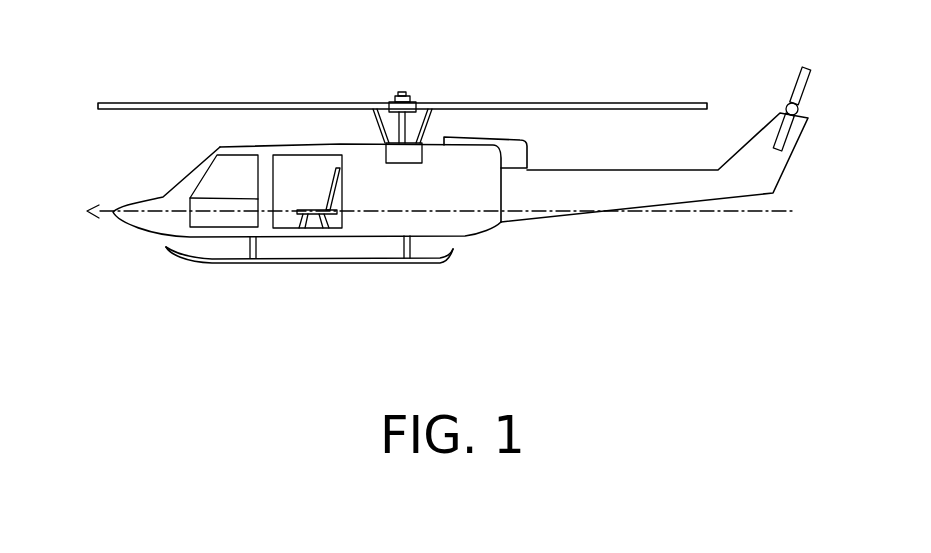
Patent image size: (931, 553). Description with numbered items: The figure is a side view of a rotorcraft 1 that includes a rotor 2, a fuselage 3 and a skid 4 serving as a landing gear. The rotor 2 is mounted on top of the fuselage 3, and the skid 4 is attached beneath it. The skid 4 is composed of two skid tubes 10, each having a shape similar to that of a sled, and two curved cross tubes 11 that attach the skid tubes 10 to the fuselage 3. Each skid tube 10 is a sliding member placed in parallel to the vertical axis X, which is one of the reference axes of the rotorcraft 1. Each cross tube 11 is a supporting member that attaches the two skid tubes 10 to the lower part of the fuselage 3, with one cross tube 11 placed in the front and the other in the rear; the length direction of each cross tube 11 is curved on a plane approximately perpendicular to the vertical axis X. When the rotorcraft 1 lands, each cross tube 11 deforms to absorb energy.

The rotorcraft 1 is at (108, 68).
The rotor 2 is at (568, 102).
The fuselage 3 is at (484, 229).
The skid 4 is at (436, 272).
The skid tube 10 is at (325, 263).
The cross tube 11 is at (253, 252).
The vertical axis X is at (718, 212).